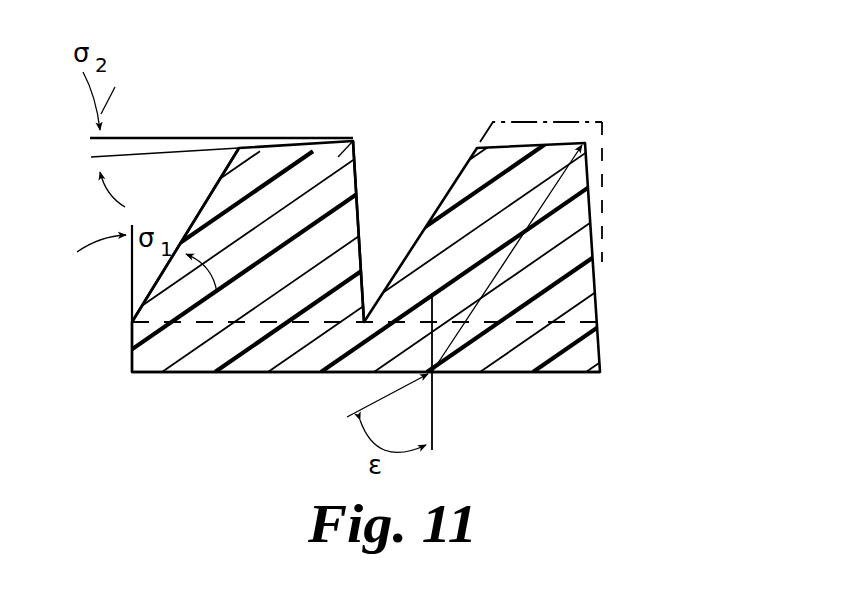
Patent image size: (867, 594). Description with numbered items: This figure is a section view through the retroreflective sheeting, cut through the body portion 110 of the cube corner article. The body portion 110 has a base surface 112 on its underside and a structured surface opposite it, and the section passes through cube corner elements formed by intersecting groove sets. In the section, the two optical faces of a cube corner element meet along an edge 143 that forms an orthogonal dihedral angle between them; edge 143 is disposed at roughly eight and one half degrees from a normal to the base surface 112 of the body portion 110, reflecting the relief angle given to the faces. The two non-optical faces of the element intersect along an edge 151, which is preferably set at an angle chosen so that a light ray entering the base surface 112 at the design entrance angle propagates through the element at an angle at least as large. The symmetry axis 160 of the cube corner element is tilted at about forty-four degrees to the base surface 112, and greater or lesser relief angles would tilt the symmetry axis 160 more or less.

The body portion 110 is at (590, 345).
The base surface 112 is at (552, 374).
The edge 143 is at (357, 168).
The edge 151 is at (148, 296).
The symmetry axis 160 is at (279, 255).